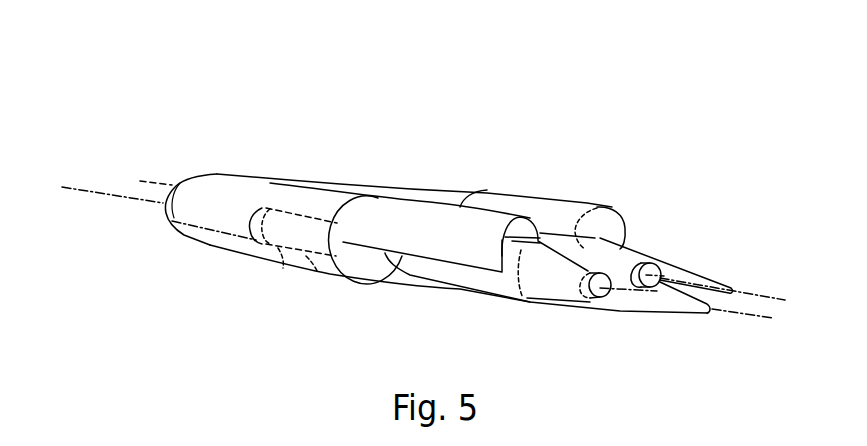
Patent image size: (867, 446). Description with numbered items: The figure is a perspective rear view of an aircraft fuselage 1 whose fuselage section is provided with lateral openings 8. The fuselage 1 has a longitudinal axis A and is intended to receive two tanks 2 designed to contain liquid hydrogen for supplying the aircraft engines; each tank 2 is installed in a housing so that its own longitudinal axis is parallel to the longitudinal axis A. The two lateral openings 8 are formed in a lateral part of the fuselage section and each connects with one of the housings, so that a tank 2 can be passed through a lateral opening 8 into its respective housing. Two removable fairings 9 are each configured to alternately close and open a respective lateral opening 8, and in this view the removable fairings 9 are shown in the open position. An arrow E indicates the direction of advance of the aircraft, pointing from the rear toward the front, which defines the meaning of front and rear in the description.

The fuselage 1 is at (352, 141).
The tank 2 is at (630, 253).
The lateral opening 8 is at (518, 233).
The removable fairing 9 is at (407, 213).
The longitudinal axis A is at (101, 194).
The arrow E is at (242, 307).